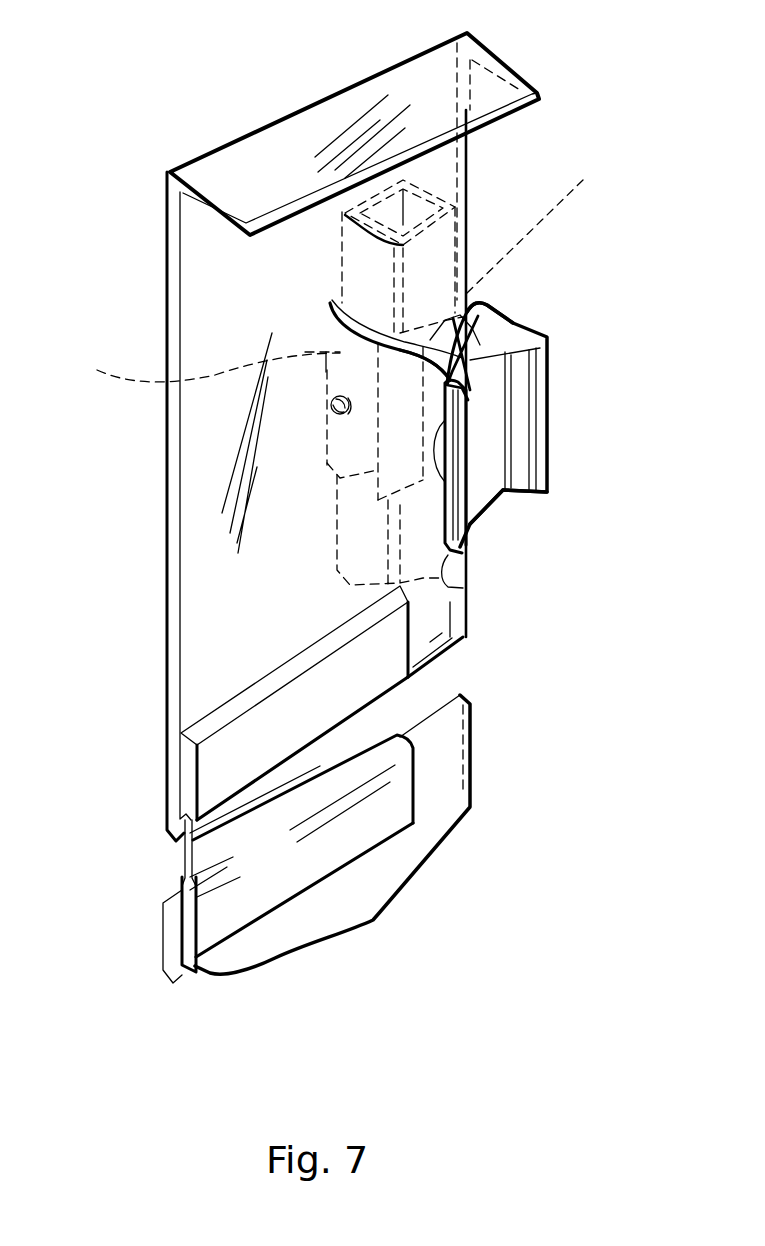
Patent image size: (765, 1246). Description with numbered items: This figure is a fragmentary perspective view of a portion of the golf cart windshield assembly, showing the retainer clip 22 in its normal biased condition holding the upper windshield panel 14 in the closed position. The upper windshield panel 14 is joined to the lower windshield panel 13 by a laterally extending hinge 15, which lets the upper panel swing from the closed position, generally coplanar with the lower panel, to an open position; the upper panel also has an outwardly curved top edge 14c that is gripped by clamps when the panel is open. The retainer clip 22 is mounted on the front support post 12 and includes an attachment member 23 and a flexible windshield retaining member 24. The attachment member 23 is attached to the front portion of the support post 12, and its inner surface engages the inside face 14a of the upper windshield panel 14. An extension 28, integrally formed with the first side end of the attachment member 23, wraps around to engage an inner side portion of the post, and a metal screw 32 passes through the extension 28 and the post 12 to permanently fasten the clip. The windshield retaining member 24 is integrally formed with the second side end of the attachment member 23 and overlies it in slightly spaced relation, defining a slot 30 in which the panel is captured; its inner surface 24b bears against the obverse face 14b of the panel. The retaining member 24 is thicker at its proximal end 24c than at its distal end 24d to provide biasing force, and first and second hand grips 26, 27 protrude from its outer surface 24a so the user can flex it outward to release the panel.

The front support post 12 is at (358, 200).
The lower windshield panel 13 is at (455, 790).
The upper windshield panel 14 is at (170, 608).
The inside face 14a is at (170, 678).
The obverse face 14b is at (215, 338).
The outwardly curved top edge 14c is at (523, 90).
The hinge 15 is at (182, 850).
The retainer clip 22 is at (503, 307).
The attachment member 23 is at (537, 224).
The windshield retaining member 24 is at (473, 360).
The outer surface 24a is at (480, 467).
The inner surface 24b is at (477, 510).
The proximal end 24c is at (530, 317).
The distal end 24d is at (460, 578).
The first hand grip 26 is at (470, 552).
The second hand grip 27 is at (547, 493).
The extension 28 is at (199, 368).
The slot 30 is at (429, 378).
The metal screw 32 is at (328, 413).